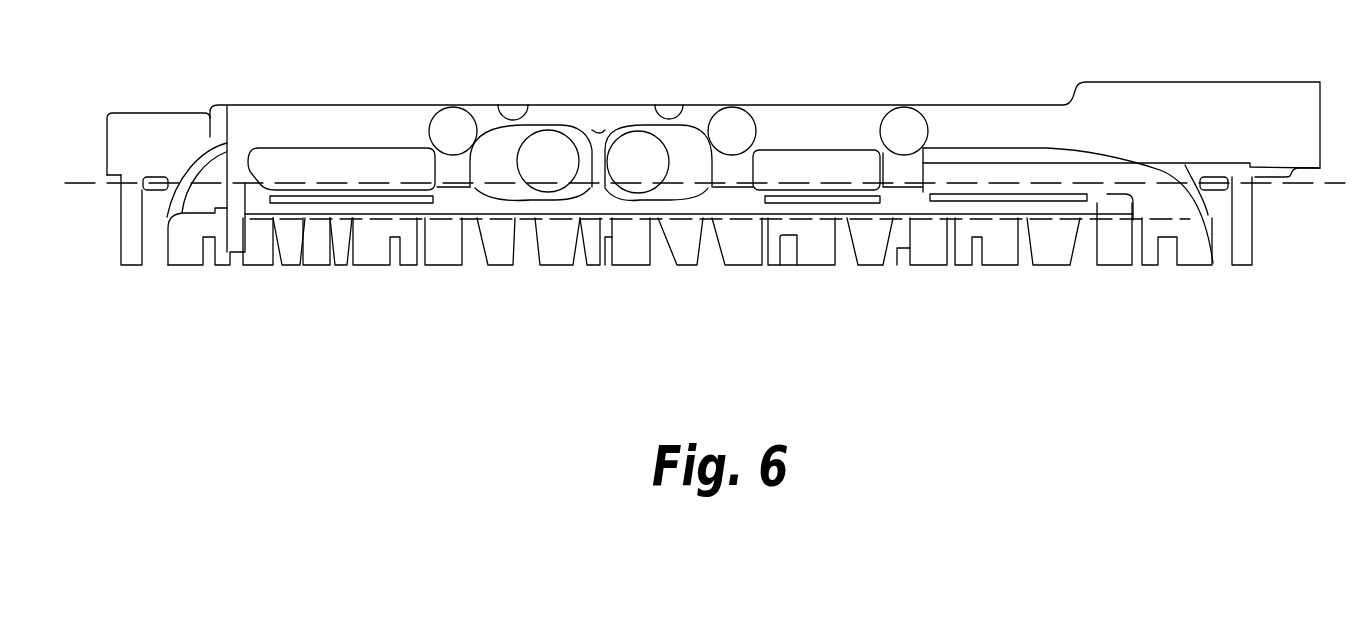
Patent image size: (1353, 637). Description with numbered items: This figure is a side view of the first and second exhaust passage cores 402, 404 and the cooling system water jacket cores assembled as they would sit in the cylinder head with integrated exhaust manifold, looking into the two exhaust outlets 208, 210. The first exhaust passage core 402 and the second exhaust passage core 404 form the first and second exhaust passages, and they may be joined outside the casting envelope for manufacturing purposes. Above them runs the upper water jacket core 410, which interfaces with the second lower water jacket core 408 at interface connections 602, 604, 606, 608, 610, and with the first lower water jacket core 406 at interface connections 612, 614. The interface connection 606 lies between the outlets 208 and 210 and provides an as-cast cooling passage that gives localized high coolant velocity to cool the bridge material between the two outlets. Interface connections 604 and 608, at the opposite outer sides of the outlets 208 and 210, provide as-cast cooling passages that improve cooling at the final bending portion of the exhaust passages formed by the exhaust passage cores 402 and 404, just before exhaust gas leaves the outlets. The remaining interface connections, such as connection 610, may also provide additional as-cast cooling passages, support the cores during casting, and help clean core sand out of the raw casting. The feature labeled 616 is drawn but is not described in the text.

The outlet 208 is at (628, 155).
The outlet 210 is at (547, 140).
The first exhaust passage core 402 is at (820, 183).
The second exhaust passage core 404 is at (310, 183).
The first lower water jacket core 406 is at (180, 266).
The second lower water jacket core 408 is at (280, 217).
The upper water jacket core 410 is at (393, 104).
The interface connection 602 is at (233, 193).
The interface connection 604 is at (457, 183).
The interface connection 606 is at (602, 170).
The interface connection 608 is at (737, 183).
The interface connection 610 is at (907, 183).
The interface connection 612 is at (137, 187).
The interface connection 614 is at (1242, 183).
The left bracket 616 is at (92, 184).